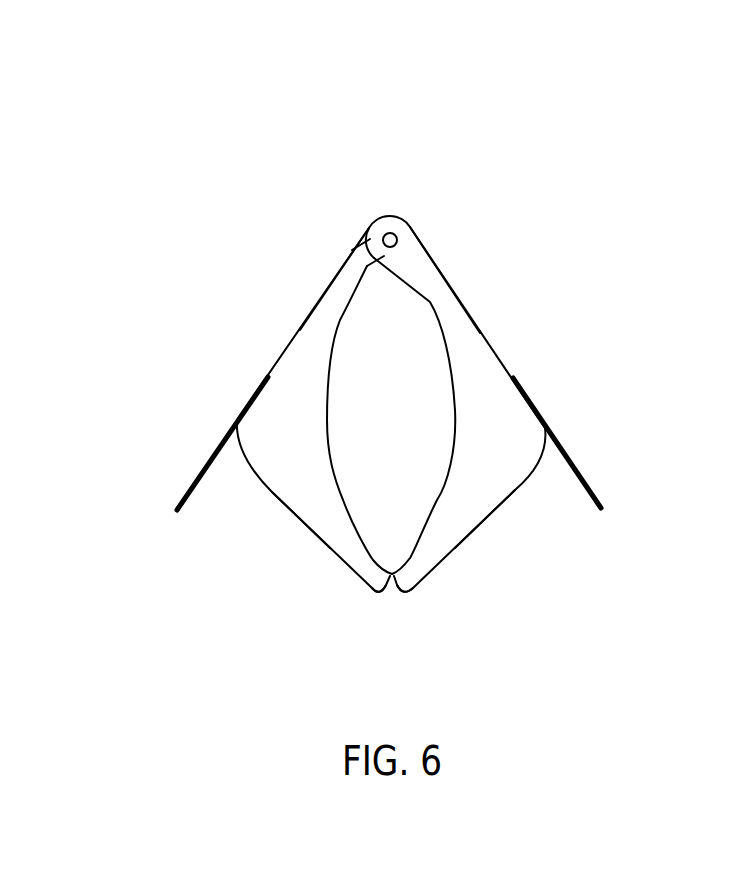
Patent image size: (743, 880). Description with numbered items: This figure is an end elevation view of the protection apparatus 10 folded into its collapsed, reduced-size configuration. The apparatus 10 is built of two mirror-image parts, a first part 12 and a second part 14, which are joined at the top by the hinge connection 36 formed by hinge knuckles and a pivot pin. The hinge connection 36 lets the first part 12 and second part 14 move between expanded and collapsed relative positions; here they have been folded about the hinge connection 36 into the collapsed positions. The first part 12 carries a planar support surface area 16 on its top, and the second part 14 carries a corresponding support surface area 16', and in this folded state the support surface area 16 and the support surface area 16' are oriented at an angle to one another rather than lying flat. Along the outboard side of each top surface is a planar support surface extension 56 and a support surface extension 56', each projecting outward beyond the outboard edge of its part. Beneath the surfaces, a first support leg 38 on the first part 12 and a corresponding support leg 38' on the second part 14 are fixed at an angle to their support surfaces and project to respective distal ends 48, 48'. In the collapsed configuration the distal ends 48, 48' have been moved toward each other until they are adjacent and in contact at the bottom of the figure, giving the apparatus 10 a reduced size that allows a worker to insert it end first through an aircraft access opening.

The protection apparatus 10 is at (275, 110).
The first part 12 is at (230, 348).
The second part 14 is at (492, 272).
The support surface area 16 is at (294, 275).
The support surface area 16' is at (504, 288).
The hinge connection 36 is at (392, 216).
The first support leg 38 is at (256, 521).
The first support leg 38' is at (526, 515).
The distal end 48 is at (346, 613).
The distal end 48' is at (445, 613).
The first support surface extension 56 is at (193, 443).
The first support surface extension 56' is at (585, 443).